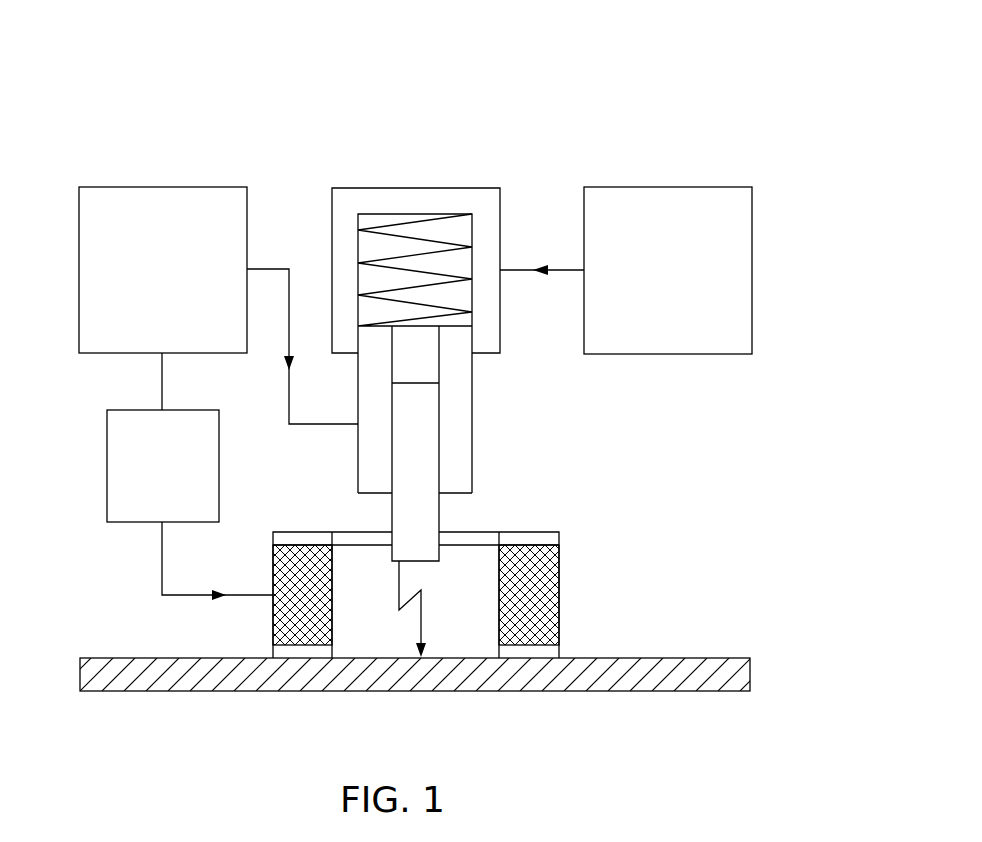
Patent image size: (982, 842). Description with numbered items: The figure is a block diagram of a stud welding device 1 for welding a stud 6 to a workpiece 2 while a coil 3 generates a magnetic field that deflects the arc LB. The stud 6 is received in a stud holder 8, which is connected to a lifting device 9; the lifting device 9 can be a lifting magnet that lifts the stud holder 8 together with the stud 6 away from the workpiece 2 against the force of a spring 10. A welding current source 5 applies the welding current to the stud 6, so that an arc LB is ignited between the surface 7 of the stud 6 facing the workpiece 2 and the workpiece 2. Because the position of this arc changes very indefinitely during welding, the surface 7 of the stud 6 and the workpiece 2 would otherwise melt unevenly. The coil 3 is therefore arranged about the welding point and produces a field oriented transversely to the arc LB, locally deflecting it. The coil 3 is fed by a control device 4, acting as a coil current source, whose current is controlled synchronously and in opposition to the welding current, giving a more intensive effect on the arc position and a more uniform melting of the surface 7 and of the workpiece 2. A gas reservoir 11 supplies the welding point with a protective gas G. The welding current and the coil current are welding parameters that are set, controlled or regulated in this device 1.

The stud welding device 1 is at (582, 64).
The workpiece 2 is at (743, 672).
The coil 3 is at (553, 600).
The control device 4 is at (155, 480).
The welding current source 5 is at (155, 283).
The stud 6 is at (426, 503).
The surface of the stud 7 is at (440, 583).
The stud holder 8 is at (459, 408).
The lifting device 9 is at (347, 207).
The spring 10 is at (410, 237).
The gas reservoir 11 is at (684, 284).